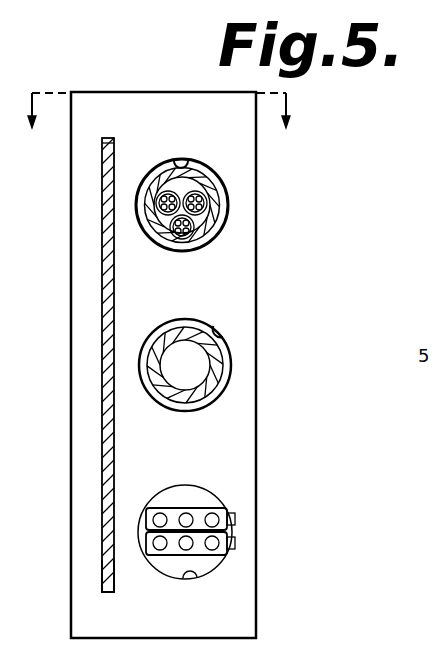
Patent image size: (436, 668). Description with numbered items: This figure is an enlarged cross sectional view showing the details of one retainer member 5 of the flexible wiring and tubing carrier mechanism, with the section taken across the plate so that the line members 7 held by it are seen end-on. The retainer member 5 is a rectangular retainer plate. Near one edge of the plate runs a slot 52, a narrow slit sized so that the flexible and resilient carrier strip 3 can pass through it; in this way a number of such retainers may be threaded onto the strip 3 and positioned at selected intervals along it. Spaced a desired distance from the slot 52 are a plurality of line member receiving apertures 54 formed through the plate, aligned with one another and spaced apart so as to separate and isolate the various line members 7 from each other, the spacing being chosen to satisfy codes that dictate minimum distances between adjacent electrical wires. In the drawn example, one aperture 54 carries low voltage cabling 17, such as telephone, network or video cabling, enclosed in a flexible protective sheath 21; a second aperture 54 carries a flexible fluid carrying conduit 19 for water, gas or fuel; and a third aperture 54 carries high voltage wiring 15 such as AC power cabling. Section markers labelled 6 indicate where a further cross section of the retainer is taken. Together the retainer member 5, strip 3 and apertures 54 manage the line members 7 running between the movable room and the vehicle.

The carrier strip 3 is at (102, 553).
The retainer member 5 is at (242, 600).
The section line 6- 6 is at (156, 123).
The line member 7 is at (160, 241).
The high voltage wiring 15 is at (236, 541).
The low voltage cabling 17 is at (194, 232).
The flexible fluid carrying conduit 19 is at (231, 361).
The flexible protective sheath 21 is at (196, 246).
The slot 52 is at (102, 377).
The line member receiving aperture 54 is at (181, 162).